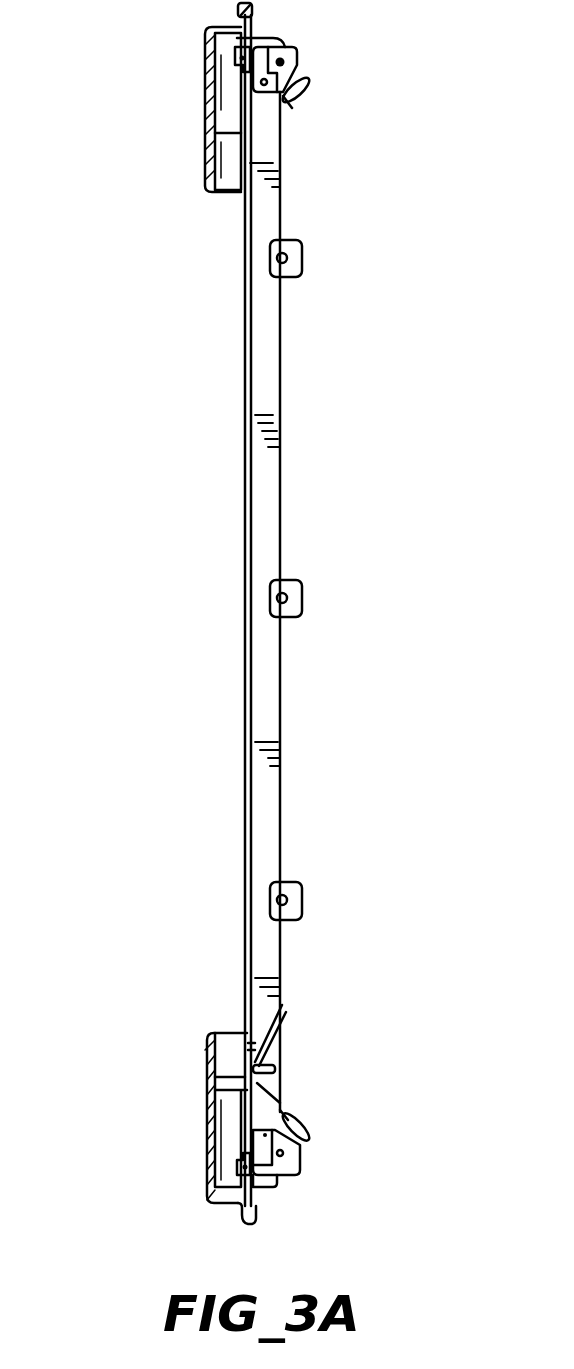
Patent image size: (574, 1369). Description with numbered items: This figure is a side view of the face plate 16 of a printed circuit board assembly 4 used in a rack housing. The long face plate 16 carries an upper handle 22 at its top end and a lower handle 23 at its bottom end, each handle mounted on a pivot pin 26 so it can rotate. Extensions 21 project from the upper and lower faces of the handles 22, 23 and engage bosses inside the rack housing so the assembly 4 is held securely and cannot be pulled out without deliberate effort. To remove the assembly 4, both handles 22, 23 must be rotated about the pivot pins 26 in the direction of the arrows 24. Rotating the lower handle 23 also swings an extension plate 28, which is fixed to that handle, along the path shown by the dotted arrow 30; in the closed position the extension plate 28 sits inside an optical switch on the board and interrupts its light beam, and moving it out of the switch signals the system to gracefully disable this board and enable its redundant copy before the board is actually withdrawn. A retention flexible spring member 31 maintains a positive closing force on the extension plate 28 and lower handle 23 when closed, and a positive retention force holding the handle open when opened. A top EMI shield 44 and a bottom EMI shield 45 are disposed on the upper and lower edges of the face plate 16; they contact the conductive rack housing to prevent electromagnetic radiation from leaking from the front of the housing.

The printed circuit board assembly 4 is at (350, 641).
The face plate 16 is at (243, 610).
The extensions 21 is at (240, 10).
The upper handle 22 is at (213, 152).
The lower handle 23 is at (225, 1078).
The arrows 24 is at (210, 202).
The pivot pins 26 is at (243, 58).
The extension plate 28 is at (292, 100).
The dotted arrow 30 is at (270, 1043).
The retention flexible spring member 31 is at (268, 1097).
The top EMI shield 44 is at (267, 38).
The bottom EMI shield 45 is at (273, 1190).